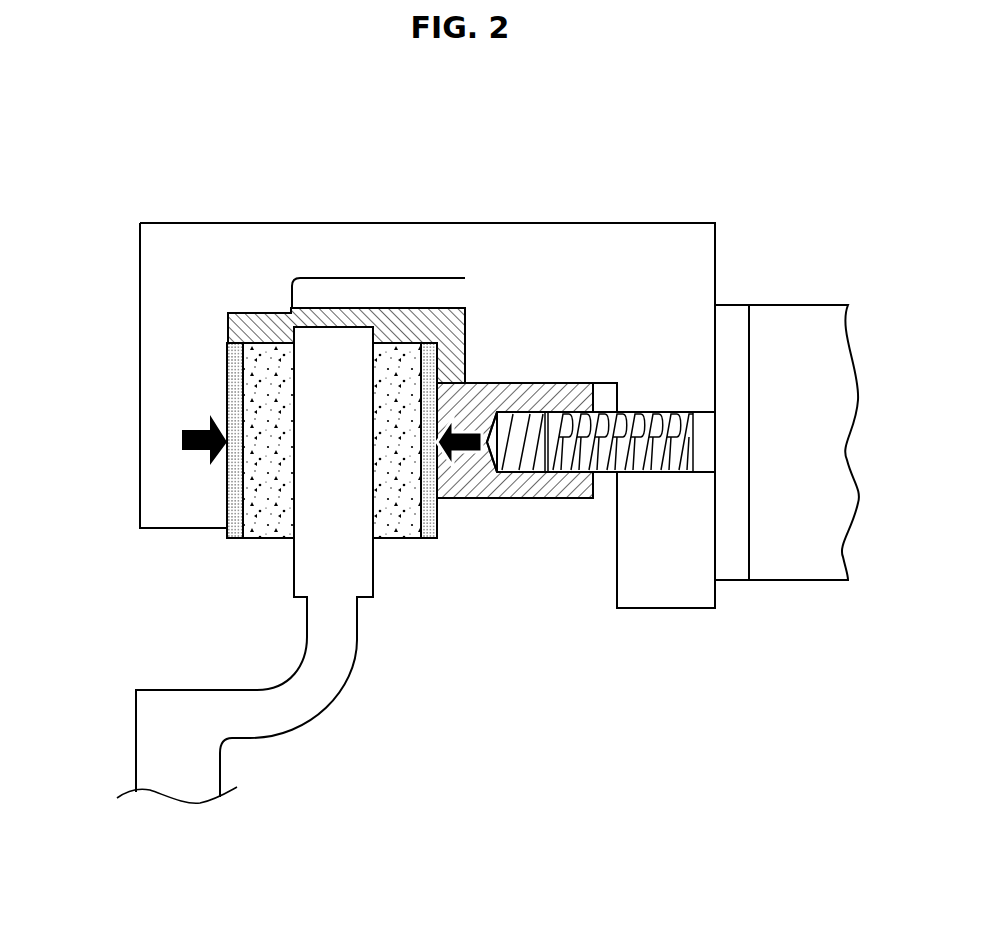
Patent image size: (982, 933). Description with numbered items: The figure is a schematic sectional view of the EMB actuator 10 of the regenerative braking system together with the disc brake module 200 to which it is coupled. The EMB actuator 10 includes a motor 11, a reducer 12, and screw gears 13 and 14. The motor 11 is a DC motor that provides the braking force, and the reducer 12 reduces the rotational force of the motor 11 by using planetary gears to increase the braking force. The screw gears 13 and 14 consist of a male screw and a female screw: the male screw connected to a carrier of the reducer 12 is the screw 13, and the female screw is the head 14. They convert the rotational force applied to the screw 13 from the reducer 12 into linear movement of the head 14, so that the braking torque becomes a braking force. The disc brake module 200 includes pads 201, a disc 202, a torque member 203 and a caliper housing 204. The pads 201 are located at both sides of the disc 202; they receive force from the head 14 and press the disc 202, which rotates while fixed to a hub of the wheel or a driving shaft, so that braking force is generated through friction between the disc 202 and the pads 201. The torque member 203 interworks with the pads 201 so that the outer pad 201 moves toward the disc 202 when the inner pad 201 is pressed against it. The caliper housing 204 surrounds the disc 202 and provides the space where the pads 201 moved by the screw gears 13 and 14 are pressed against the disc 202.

The EMB actuator 10 is at (480, 107).
The motor 11 is at (818, 304).
The reducer 12 is at (732, 308).
The screw 13 is at (633, 473).
The head 14 is at (515, 498).
The disc brake module 200 is at (139, 278).
The pads 201 is at (257, 540).
The disc 202 is at (135, 741).
The torque member 203 is at (335, 308).
The caliper housing 204 is at (610, 223).